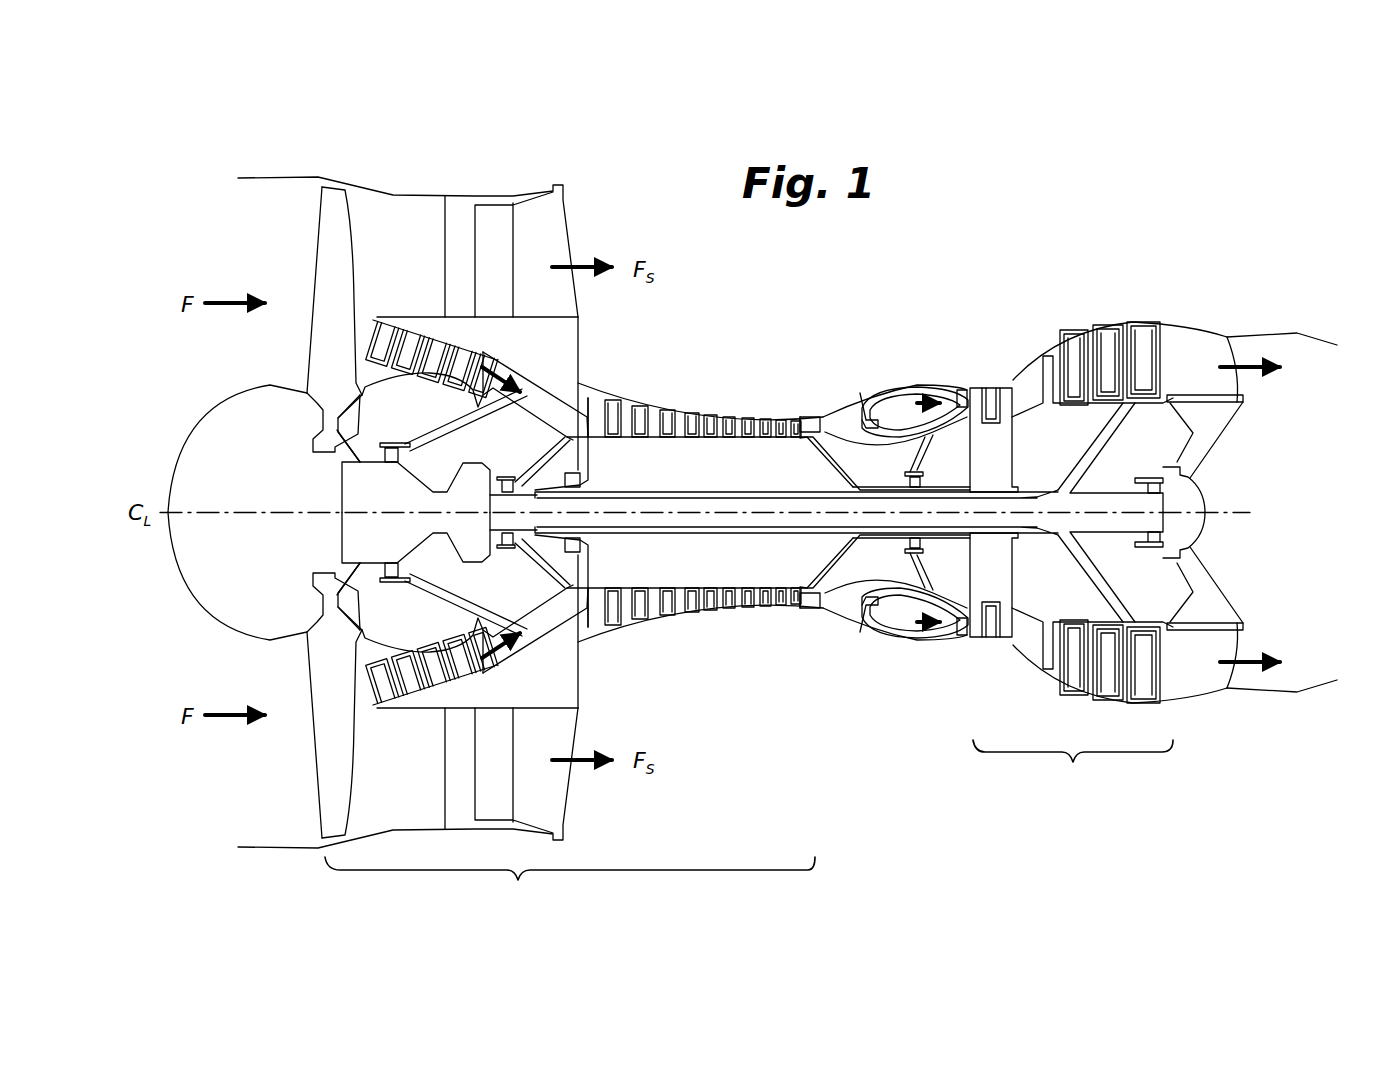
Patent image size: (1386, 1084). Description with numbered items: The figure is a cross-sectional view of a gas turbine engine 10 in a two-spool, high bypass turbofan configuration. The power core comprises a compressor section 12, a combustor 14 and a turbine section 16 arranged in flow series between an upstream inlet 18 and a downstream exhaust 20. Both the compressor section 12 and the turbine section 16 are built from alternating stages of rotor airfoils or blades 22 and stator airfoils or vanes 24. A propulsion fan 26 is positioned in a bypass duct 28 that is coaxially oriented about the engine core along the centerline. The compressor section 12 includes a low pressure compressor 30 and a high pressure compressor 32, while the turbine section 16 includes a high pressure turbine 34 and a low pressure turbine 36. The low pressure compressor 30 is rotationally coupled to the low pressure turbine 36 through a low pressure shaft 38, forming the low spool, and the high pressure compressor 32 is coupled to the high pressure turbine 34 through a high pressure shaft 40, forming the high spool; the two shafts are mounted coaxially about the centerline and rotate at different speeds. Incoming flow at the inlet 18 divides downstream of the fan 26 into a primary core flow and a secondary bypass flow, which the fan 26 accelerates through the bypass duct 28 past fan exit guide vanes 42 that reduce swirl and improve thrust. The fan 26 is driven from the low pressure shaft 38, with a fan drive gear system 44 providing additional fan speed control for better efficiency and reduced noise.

The gas turbine engine 10 is at (206, 151).
The compressor section 12 is at (570, 881).
The combustor 14 is at (912, 388).
The turbine section 16 is at (1073, 767).
The inlet 18 is at (226, 392).
The exhaust 20 is at (1286, 461).
The rotor airfoils 22 is at (631, 415).
The stator airfoils 24 is at (670, 415).
The propulsion fan 26 is at (327, 263).
The bypass duct 28 is at (421, 265).
The low pressure compressor 30 is at (530, 667).
The high pressure compressor 32 is at (714, 624).
The high pressure turbine 34 is at (998, 652).
The low pressure turbine 36 is at (1066, 693).
The low pressure shaft 38 is at (747, 525).
The high pressure shaft 40 is at (828, 545).
The fan exit guide vanes 42 is at (455, 213).
The fan drive gear system 44 is at (480, 458).